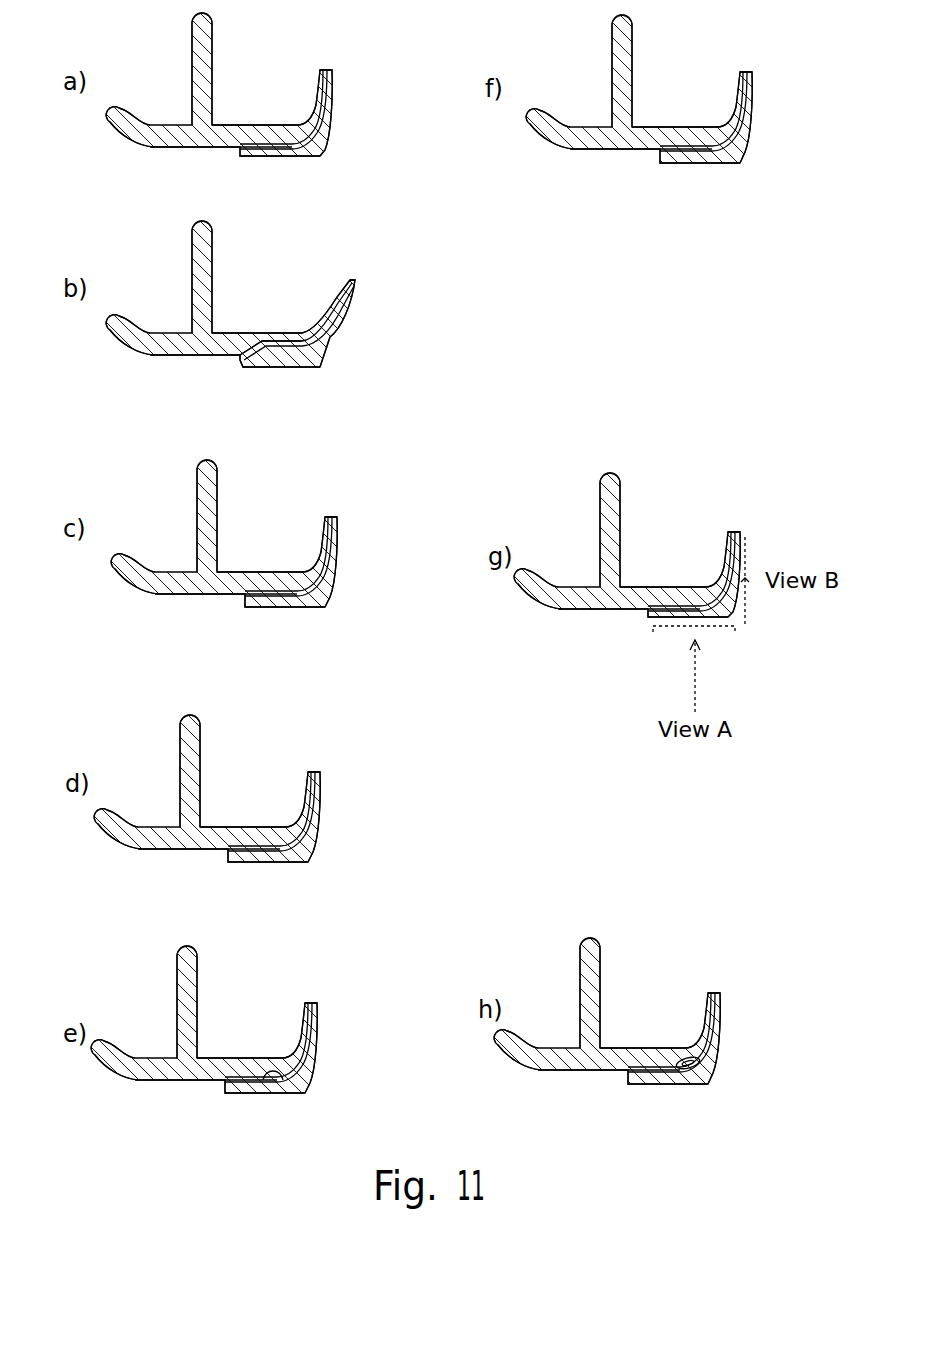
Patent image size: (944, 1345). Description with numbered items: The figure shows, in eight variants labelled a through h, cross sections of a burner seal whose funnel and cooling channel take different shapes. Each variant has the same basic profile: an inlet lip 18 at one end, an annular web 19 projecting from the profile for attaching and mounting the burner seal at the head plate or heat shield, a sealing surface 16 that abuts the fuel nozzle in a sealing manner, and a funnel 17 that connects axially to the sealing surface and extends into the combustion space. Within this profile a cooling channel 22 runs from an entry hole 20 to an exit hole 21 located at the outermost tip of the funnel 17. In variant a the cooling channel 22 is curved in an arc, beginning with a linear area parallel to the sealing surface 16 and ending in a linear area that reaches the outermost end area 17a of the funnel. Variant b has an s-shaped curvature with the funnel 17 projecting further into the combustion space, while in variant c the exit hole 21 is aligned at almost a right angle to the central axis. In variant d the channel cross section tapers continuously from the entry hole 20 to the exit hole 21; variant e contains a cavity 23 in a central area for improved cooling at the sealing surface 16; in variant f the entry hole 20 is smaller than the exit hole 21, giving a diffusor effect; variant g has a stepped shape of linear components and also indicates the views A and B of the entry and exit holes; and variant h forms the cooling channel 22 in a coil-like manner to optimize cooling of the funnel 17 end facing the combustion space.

The sealing surface 16 is at (98, 31).
The funnel 17 is at (548, 581).
The outermost end area of the funnel 17a is at (554, 511).
The inlet lip 18 is at (317, 553).
The annular web 19 is at (447, 535).
The entry hole 20 is at (426, 630).
The exit hole 21 is at (486, 541).
The cooling channel 22 is at (519, 629).
The cavity 23 is at (258, 1115).